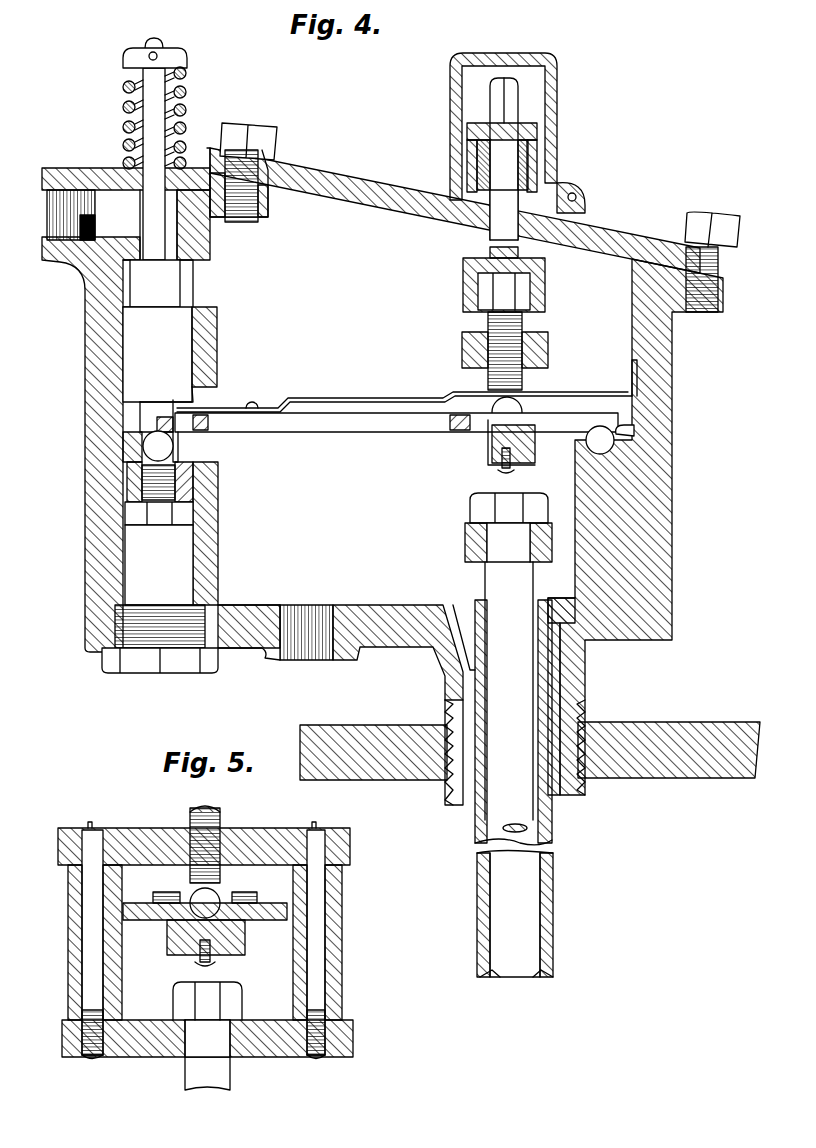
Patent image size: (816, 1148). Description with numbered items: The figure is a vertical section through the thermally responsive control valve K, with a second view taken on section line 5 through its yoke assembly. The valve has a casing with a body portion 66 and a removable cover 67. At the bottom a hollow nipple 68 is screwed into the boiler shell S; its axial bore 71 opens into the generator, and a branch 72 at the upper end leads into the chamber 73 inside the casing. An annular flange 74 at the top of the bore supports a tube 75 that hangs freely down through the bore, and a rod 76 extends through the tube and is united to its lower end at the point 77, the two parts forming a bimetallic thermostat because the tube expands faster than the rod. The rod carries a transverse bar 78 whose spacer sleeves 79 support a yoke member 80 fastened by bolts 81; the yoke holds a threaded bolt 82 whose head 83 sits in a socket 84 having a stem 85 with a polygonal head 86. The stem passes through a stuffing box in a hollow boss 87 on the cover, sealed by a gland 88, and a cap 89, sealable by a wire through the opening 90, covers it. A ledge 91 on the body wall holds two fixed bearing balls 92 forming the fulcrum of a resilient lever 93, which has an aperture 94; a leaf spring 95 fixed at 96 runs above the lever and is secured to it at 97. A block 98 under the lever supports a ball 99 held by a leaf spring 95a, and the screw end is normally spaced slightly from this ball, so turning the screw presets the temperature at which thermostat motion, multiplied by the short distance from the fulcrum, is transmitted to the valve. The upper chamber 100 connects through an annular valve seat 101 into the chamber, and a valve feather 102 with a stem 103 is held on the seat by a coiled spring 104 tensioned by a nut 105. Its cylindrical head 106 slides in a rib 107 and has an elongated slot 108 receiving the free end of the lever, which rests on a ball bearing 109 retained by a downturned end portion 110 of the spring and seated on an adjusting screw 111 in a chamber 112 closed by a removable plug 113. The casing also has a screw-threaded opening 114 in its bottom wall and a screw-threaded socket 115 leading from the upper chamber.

In FIG. 4, the body portion 66 is at (672, 528).
In FIG. 4, the removable cover 67 is at (612, 235).
In FIG. 4, the hollow boss or nipple 68 is at (585, 672).
In FIG. 4, the axial bore 71 is at (558, 815).
In FIG. 4, the branch 72 is at (455, 658).
In FIG. 4, the chamber or space 73 is at (372, 620).
In FIG. 4, the annular flange 74 is at (555, 605).
In FIG. 4, the tube 75 is at (477, 836).
In FIG. 4, the rod 76 is at (515, 890).
In FIG. 4, the point of union 77 is at (545, 977).
In FIG. 4, the transverse bar 78 is at (470, 534).
In FIG. 5, the transverse bar 78 is at (66, 1038).
In FIG. 5, the spacer sleeves 79 is at (72, 940).
In FIG. 4, the yoke member 80 is at (470, 352).
In FIG. 5, the yoke member 80 is at (60, 848).
In FIG. 5, the bolts 81 is at (90, 888).
In FIG. 4, the bolt 82 is at (515, 318).
In FIG. 5, the bolt 82 is at (190, 812).
In FIG. 4, the head 83 is at (520, 295).
In FIG. 4, the socket 84 is at (470, 284).
In FIG. 4, the stem 85 is at (498, 222).
In FIG. 4, the polygonal head 86 is at (512, 90).
In FIG. 4, the hollow boss 87 is at (530, 178).
In FIG. 4, the gland 88 is at (537, 130).
In FIG. 4, the cap 89 is at (450, 112).
In FIG. 4, the opening 90 is at (585, 190).
In FIG. 4, the ledge 91 is at (625, 435).
In FIG. 4, the bearing balls 92 is at (598, 442).
In FIG. 4, the lever 93 is at (400, 425).
In FIG. 5, the lever 93 is at (150, 920).
In FIG. 4, the aperture 94 is at (460, 412).
In FIG. 4, the leaf spring 95 is at (570, 398).
In FIG. 5, the leaf spring 95 is at (168, 892).
In FIG. 4, the leaf spring 95a is at (504, 468).
In FIG. 5, the leaf spring 95a is at (212, 958).
In FIG. 4, the fixing point 96 is at (632, 372).
In FIG. 4, the securing point 97 is at (253, 404).
In FIG. 4, the block 98 is at (500, 440).
In FIG. 5, the block 98 is at (206, 937).
In FIG. 4, the ball 99 is at (505, 408).
In FIG. 5, the ball 99 is at (210, 897).
In FIG. 4, the chamber 100 is at (118, 212).
In FIG. 4, the annular valve seat 101 is at (205, 238).
In FIG. 4, the valve feather 102 is at (172, 282).
In FIG. 4, the stem 103 is at (150, 99).
In FIG. 4, the coiled spring 104 is at (185, 110).
In FIG. 4, the nut 105 is at (175, 56).
In FIG. 4, the cylindrical head 106 is at (178, 322).
In FIG. 4, the rib 107 is at (218, 340).
In FIG. 4, the vertically elongated slot 108 is at (155, 410).
In FIG. 4, the ball bearing 109 is at (140, 450).
In FIG. 4, the downturned end portion 110 is at (180, 450).
In FIG. 4, the adjusting screw 111 is at (145, 490).
In FIG. 4, the chamber 112 is at (120, 562).
In FIG. 4, the removable plug 113 is at (118, 672).
In FIG. 4, the screw-threaded opening 114 is at (290, 660).
In FIG. 4, the screw-threaded socket 115 is at (60, 202).
In FIG. 4, the section line 5 is at (500, 322).
In FIG. 4, the control valve K is at (705, 455).
In FIG. 4, the boiler shell S is at (710, 735).